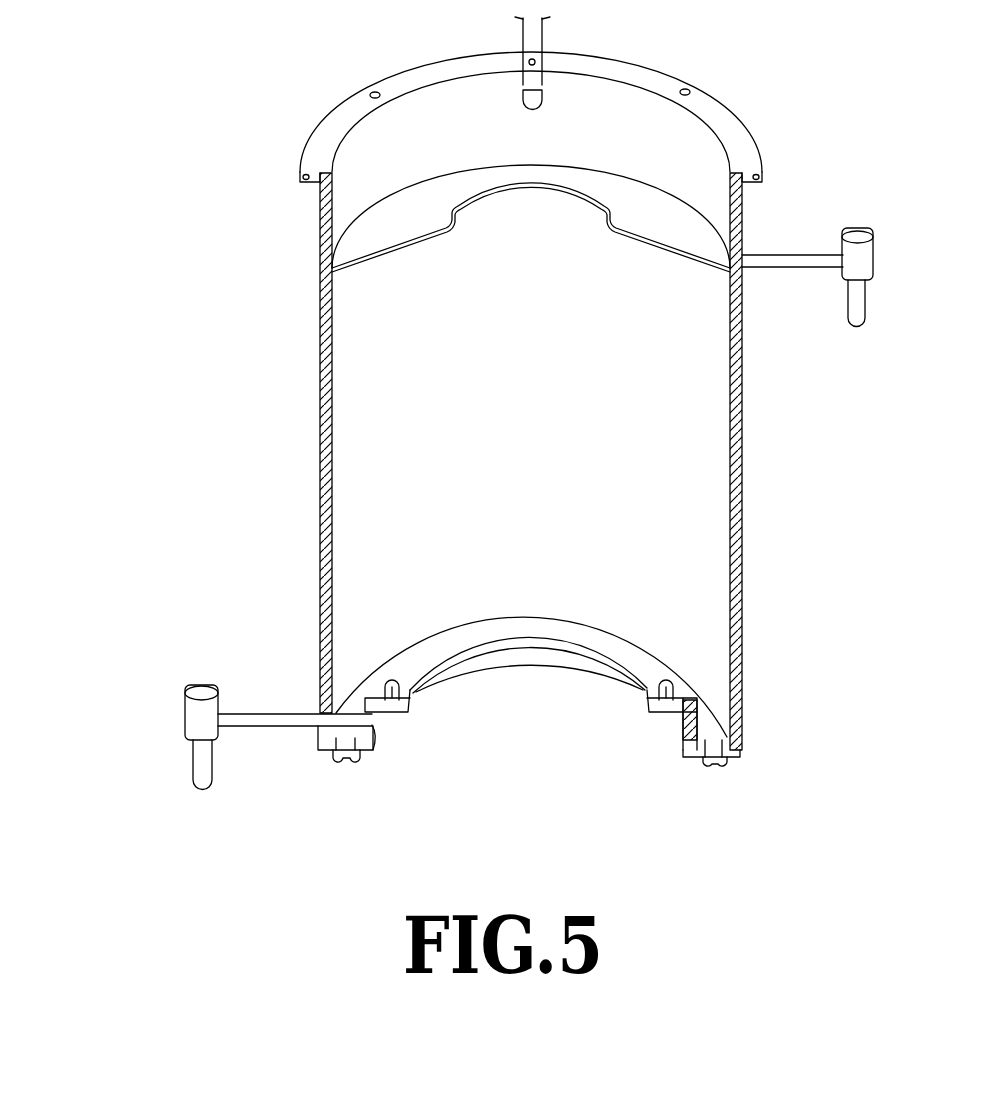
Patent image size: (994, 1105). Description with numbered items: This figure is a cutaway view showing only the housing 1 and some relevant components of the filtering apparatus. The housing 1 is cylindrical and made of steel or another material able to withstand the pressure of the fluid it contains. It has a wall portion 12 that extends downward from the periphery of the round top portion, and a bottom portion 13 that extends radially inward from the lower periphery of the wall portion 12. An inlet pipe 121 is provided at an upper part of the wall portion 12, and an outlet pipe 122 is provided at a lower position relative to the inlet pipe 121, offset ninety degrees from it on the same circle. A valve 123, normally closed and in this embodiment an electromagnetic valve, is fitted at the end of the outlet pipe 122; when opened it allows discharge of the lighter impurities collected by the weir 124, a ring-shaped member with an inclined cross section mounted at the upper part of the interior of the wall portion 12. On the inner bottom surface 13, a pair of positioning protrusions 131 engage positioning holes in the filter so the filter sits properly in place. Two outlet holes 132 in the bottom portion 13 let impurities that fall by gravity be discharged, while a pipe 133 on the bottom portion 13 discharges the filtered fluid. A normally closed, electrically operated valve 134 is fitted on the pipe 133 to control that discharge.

The housing 1 is at (796, 395).
The wall portion 12 is at (742, 458).
The inlet pipe 121 is at (520, 40).
The outlet pipe 122 is at (797, 260).
The valve 123 is at (862, 224).
The weir 124 is at (653, 243).
The bottom portion 13 is at (708, 719).
The positioning protrusions 131 is at (665, 687).
The outlet holes 132 is at (710, 760).
The pipe 133 is at (275, 716).
The valve 134 is at (193, 713).